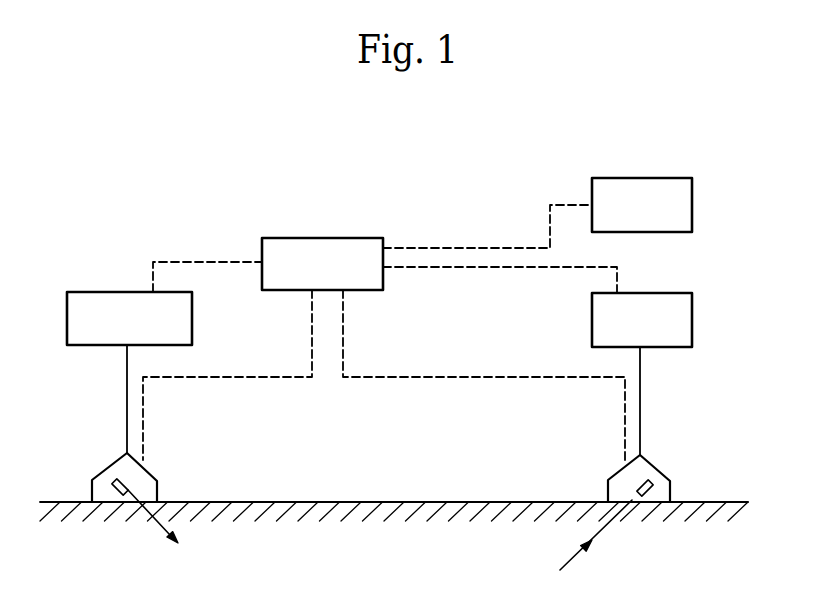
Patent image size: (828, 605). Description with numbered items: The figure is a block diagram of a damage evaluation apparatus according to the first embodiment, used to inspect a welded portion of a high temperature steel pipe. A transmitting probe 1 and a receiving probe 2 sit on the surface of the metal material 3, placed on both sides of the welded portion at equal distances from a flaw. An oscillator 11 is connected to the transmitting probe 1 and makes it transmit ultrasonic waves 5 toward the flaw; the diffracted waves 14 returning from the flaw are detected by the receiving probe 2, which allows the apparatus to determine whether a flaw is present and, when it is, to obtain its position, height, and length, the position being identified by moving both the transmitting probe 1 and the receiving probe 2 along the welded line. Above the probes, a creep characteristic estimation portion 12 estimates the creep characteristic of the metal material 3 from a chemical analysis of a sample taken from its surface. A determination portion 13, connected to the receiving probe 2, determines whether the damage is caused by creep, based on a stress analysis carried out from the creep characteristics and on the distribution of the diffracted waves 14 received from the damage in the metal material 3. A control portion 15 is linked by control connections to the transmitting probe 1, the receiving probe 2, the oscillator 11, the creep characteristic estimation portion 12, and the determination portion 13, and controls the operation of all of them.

The transmitting probe 1 is at (143, 463).
The receiving probe 2 is at (650, 462).
The metal material 3 is at (715, 503).
The ultrasonic waves 5 is at (150, 517).
The oscillator 11 is at (122, 300).
The creep characteristic estimation portion 12 is at (657, 188).
The determination portion 13 is at (657, 300).
The diffracted waves 14 is at (607, 528).
The control portion 15 is at (325, 247).